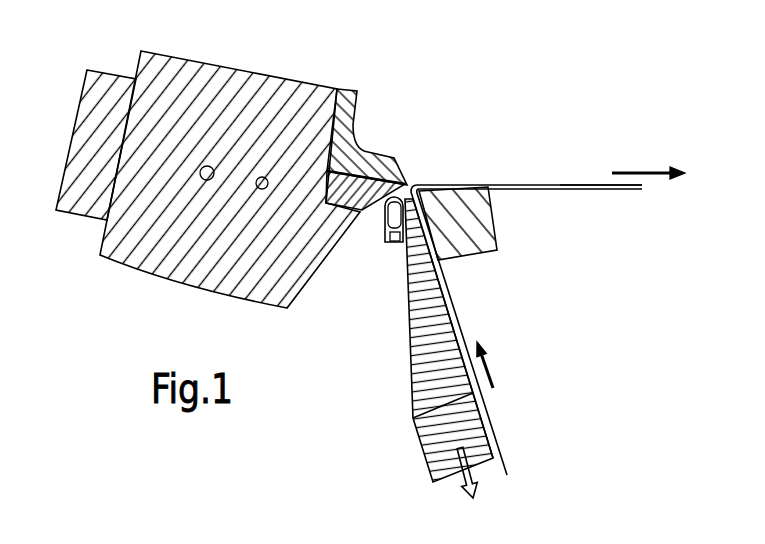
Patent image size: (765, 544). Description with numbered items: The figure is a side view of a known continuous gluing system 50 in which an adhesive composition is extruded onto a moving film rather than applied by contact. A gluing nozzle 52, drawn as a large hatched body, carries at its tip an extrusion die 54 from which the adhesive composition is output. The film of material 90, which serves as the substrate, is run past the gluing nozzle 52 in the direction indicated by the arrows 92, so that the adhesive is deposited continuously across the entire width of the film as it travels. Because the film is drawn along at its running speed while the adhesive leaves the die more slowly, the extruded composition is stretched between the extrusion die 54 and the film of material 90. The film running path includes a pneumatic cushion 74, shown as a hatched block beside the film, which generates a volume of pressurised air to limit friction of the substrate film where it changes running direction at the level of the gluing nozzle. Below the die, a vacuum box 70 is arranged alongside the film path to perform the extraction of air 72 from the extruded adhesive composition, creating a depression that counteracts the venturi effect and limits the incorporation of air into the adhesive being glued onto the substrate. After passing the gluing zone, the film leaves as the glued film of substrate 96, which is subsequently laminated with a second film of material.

The continuous gluing system 50 is at (556, 58).
The gluing nozzle 52 is at (313, 37).
The extrusion die 54 is at (374, 134).
The vacuum box 70 is at (410, 370).
The extraction of air 72 is at (477, 485).
The pneumatic cushion 74 is at (497, 236).
The film of material 90 is at (492, 422).
The arrows 92 is at (645, 170).
The glued film of substrate 96 is at (572, 185).